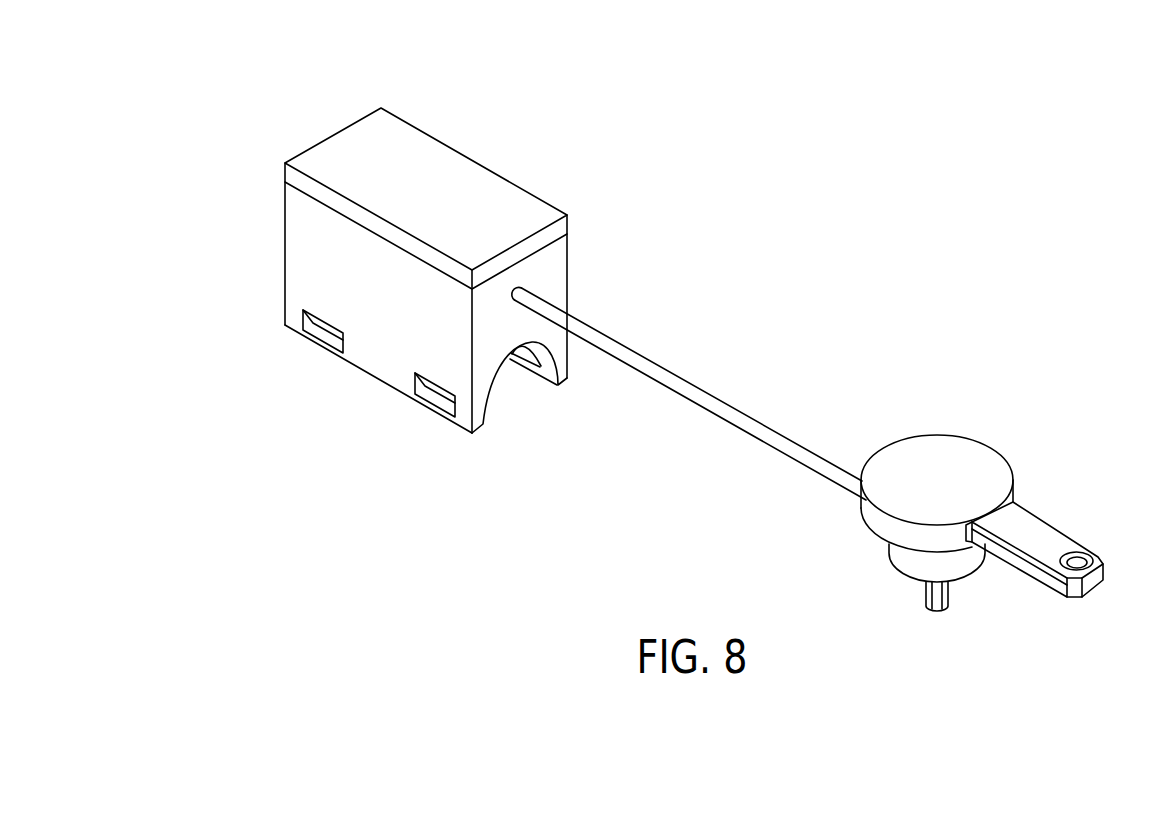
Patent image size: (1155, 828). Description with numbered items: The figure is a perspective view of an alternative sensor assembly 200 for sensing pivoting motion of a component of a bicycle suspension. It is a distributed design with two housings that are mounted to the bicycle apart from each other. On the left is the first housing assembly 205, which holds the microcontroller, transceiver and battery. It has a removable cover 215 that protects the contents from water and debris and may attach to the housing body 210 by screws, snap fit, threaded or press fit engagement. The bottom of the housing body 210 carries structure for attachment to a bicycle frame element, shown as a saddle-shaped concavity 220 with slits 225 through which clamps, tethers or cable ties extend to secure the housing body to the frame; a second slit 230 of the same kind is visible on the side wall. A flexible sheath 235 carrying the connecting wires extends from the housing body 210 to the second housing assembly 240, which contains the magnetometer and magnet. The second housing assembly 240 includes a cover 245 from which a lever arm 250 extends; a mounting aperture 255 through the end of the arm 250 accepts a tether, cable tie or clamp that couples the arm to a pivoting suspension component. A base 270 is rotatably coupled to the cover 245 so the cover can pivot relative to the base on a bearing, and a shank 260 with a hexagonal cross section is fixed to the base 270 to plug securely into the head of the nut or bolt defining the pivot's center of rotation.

The sensor assembly 200 is at (680, 257).
The first housing assembly 205 is at (483, 150).
The housing body 210 is at (378, 358).
The removable cover 215 is at (400, 140).
The saddle-shaped concavity 220 is at (505, 377).
The slits 225 is at (320, 333).
The second slot 230 is at (432, 397).
The flexible sheath 235 is at (702, 403).
The second housing assembly 240 is at (957, 432).
The cover 245 is at (982, 480).
The lever arm 250 is at (1027, 540).
The mounting aperture 255 is at (1073, 560).
The shank 260 is at (937, 611).
The base 270 is at (910, 568).